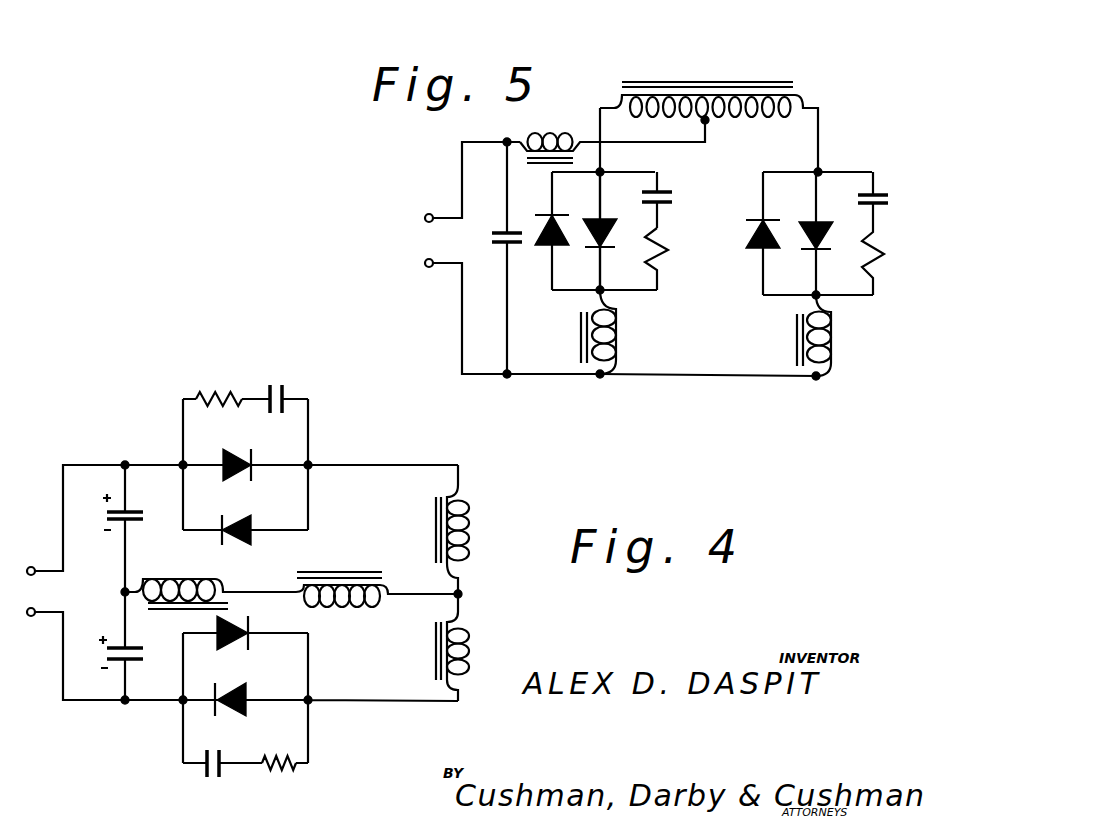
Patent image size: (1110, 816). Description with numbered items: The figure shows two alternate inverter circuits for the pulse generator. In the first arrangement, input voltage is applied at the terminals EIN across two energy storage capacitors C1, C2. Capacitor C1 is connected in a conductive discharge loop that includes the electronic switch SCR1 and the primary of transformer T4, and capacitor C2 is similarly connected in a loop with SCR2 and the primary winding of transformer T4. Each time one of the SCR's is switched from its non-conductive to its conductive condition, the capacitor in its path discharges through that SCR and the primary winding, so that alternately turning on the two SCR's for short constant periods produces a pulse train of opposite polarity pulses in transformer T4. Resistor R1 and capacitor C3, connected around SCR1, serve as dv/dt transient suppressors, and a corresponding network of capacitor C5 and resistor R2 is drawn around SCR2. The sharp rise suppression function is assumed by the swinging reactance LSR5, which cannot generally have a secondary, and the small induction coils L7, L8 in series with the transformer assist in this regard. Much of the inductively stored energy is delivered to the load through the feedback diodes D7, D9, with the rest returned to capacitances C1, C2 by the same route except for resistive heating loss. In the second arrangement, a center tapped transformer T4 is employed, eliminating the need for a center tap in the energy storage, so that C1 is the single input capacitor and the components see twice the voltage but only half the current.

In FIG. 5, the input voltage terminals EIN is at (414, 240).
In FIG. 4, the input voltage terminals EIN is at (31, 591).
In FIG. 5, the capacitor C1 is at (494, 258).
In FIG. 4, the capacitor C1 is at (135, 528).
In FIG. 4, the capacitor C2 is at (132, 647).
In FIG. 4, the capacitor C3 is at (284, 385).
In FIG. 5, the capacitor C5 is at (672, 200).
In FIG. 4, the capacitor C5 is at (201, 782).
In FIG. 5, the resistor R1 is at (859, 236).
In FIG. 4, the resistor R1 is at (219, 385).
In FIG. 5, the resistor R2 is at (674, 259).
In FIG. 4, the resistor R2 is at (279, 784).
In FIG. 5, the diode D7 is at (771, 233).
In FIG. 4, the diode D7 is at (246, 547).
In FIG. 5, the feedback diode D9 is at (558, 231).
In FIG. 4, the feedback diode D9 is at (247, 644).
In FIG. 5, the electronic switch SCR1 is at (835, 233).
In FIG. 4, the electronic switch SCR1 is at (244, 479).
In FIG. 5, the electronic switch SCR2 is at (616, 231).
In FIG. 4, the electronic switch SCR2 is at (243, 718).
In FIG. 5, the small induction coil L7 is at (614, 332).
In FIG. 4, the small induction coil L7 is at (469, 647).
In FIG. 5, the small induction coil L8 is at (831, 335).
In FIG. 4, the small induction coil L8 is at (468, 529).
In FIG. 5, the transformer T4 is at (709, 111).
In FIG. 4, the transformer T4 is at (374, 609).
In FIG. 5, the swinging reactance LSR5 is at (557, 135).
In FIG. 4, the swinging reactance LSR5 is at (207, 582).